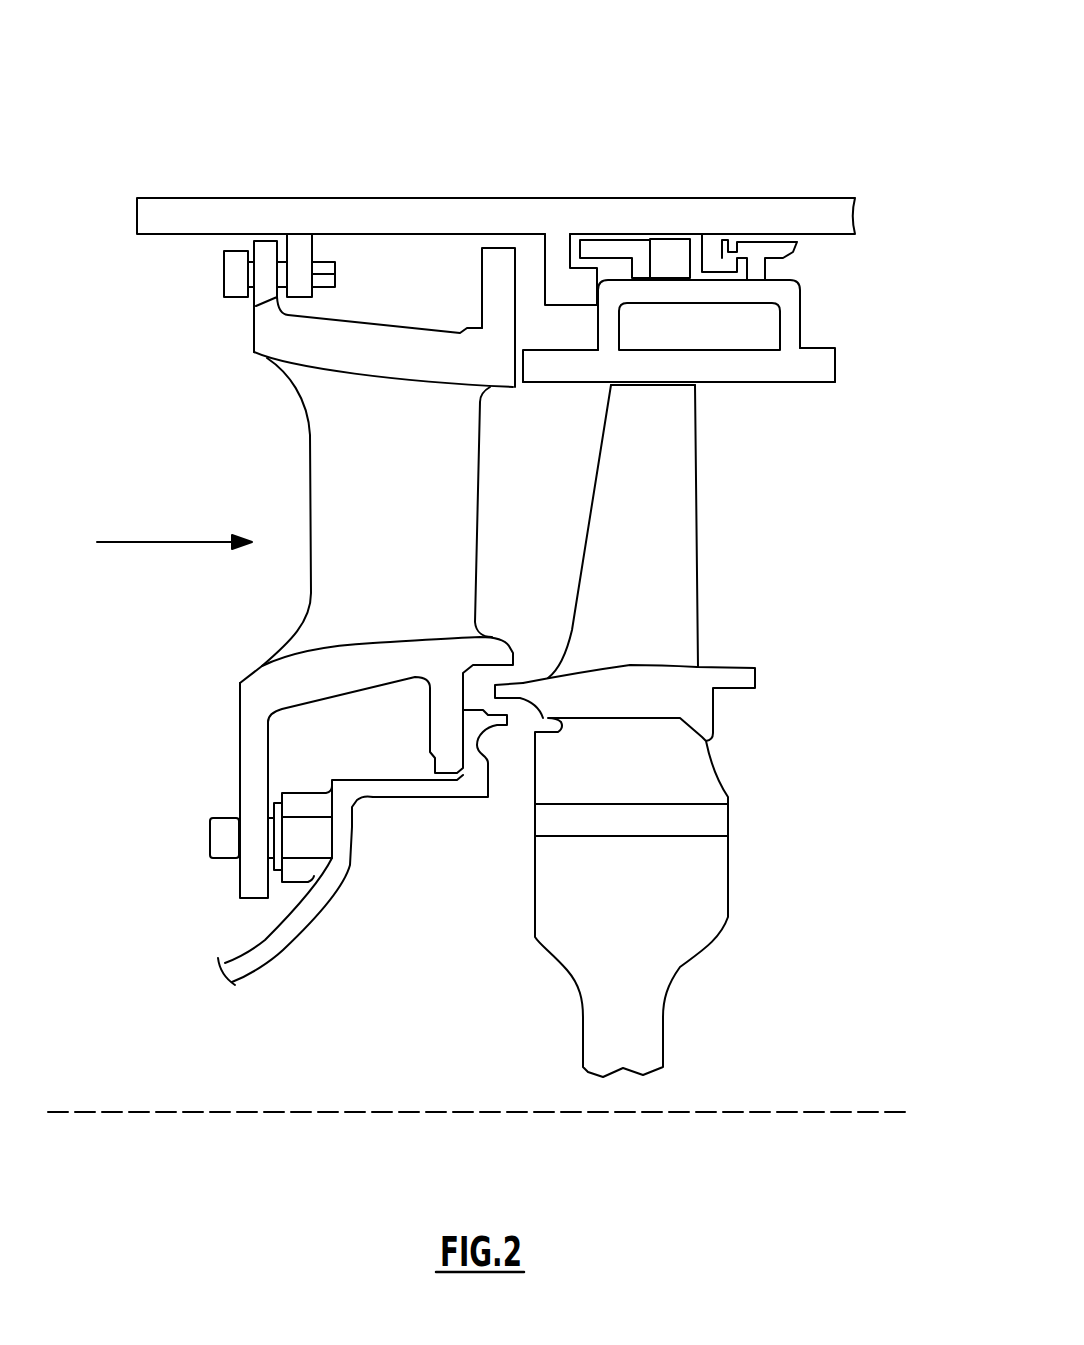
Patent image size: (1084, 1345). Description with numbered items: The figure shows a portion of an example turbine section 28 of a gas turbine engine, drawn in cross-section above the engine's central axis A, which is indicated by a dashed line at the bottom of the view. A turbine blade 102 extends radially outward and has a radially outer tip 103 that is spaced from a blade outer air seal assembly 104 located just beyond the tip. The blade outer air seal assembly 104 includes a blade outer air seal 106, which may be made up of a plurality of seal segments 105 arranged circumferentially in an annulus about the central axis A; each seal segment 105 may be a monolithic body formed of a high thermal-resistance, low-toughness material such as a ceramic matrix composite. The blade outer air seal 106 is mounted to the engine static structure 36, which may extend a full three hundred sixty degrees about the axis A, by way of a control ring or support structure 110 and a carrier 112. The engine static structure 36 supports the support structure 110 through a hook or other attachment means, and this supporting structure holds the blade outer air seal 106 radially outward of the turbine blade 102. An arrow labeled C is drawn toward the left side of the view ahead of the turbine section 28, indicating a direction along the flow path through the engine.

The turbine section 28 is at (543, 544).
The engine static structure 36 is at (203, 217).
The turbine blade 102 is at (649, 731).
The radially outer tip 103 is at (677, 387).
The blade outer air seal assembly 104 is at (736, 333).
The seal segments 105 is at (822, 357).
The blade outer air seal 106 is at (820, 370).
The support structure 110 is at (585, 210).
The carrier 112 is at (641, 258).
The core flow path direction C is at (128, 542).
The central axis A is at (847, 1112).